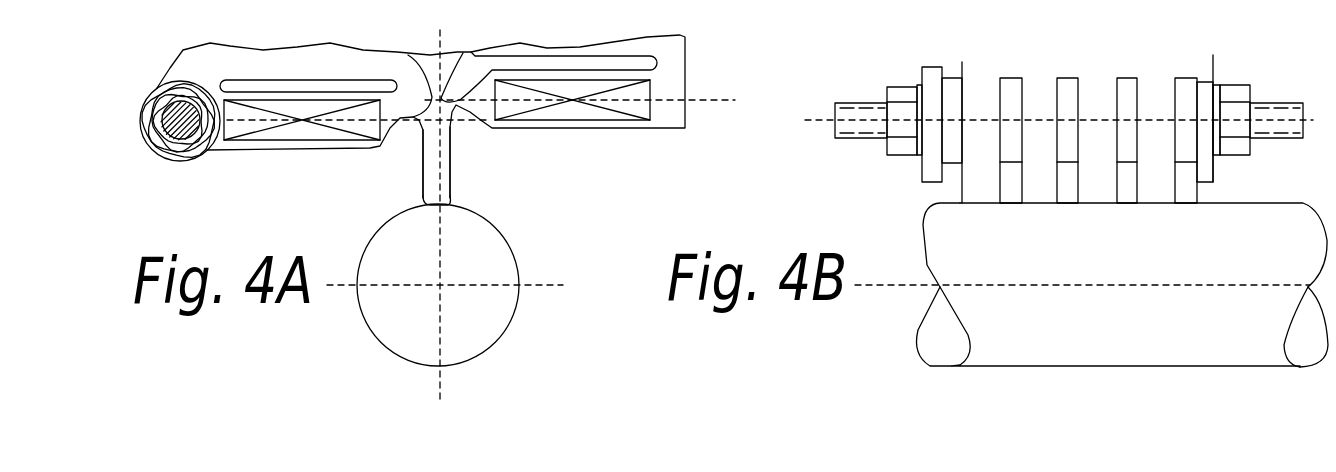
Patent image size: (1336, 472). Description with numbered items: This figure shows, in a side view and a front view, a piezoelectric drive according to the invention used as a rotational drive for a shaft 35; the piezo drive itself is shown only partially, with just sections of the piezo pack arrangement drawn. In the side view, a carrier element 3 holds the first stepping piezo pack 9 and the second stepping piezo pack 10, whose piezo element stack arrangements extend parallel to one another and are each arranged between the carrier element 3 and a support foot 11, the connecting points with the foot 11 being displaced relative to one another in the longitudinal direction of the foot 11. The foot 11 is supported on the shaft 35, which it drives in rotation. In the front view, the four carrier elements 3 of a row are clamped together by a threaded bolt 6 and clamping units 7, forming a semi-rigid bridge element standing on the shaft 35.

In FIG. 4B, the carrier element 3 is at (1155, 102).
In FIG. 4A, the threaded bolt 6 is at (162, 138).
In FIG. 4B, the threaded bolt 6 is at (1288, 127).
In FIG. 4B, the clamping unit 7 is at (1240, 145).
In FIG. 4A, the first stepping piezo pack 9 is at (305, 128).
In FIG. 4A, the second stepping piezo pack 10 is at (583, 110).
In FIG. 4A, the support foot 11 is at (444, 182).
In FIG. 4A, the shaft 35 is at (488, 250).
In FIG. 4B, the shaft 35 is at (1000, 315).